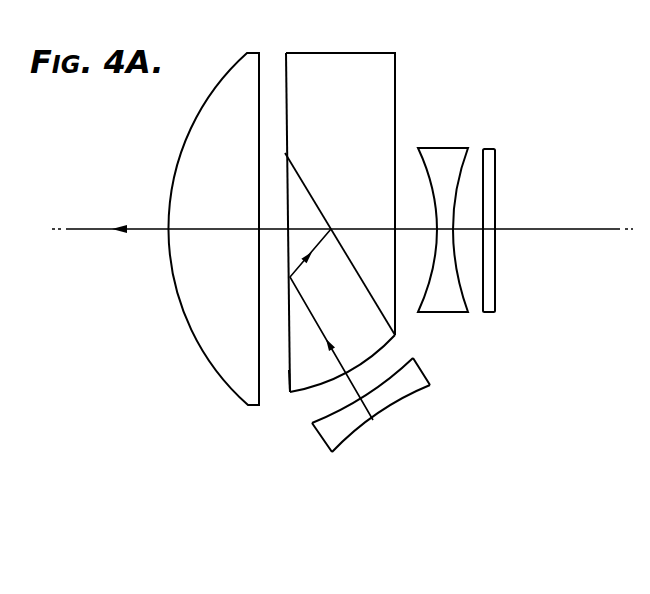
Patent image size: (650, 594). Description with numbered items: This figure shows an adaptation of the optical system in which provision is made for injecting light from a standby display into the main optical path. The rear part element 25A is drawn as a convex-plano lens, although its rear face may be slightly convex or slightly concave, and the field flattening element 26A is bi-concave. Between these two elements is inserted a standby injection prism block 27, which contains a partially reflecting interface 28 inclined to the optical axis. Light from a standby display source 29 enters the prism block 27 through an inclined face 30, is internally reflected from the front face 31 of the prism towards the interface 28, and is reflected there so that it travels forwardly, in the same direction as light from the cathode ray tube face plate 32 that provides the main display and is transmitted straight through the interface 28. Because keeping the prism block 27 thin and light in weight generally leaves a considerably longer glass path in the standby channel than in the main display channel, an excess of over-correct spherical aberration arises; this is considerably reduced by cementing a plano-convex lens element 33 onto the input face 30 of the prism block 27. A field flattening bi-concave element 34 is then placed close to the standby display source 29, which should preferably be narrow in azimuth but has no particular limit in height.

The rear part element 25A is at (221, 108).
The field flattening element 26A is at (445, 156).
The standby injection prism block 27 is at (363, 62).
The partially reflecting interface 28 is at (300, 170).
The standby display source 29 is at (391, 414).
The inclined face 30 is at (362, 350).
The front face 31 is at (290, 393).
The cathode ray tube face plate 32 is at (497, 177).
The plano-convex lens element 33 is at (392, 348).
The field flattening bi-concave element 34 is at (366, 420).